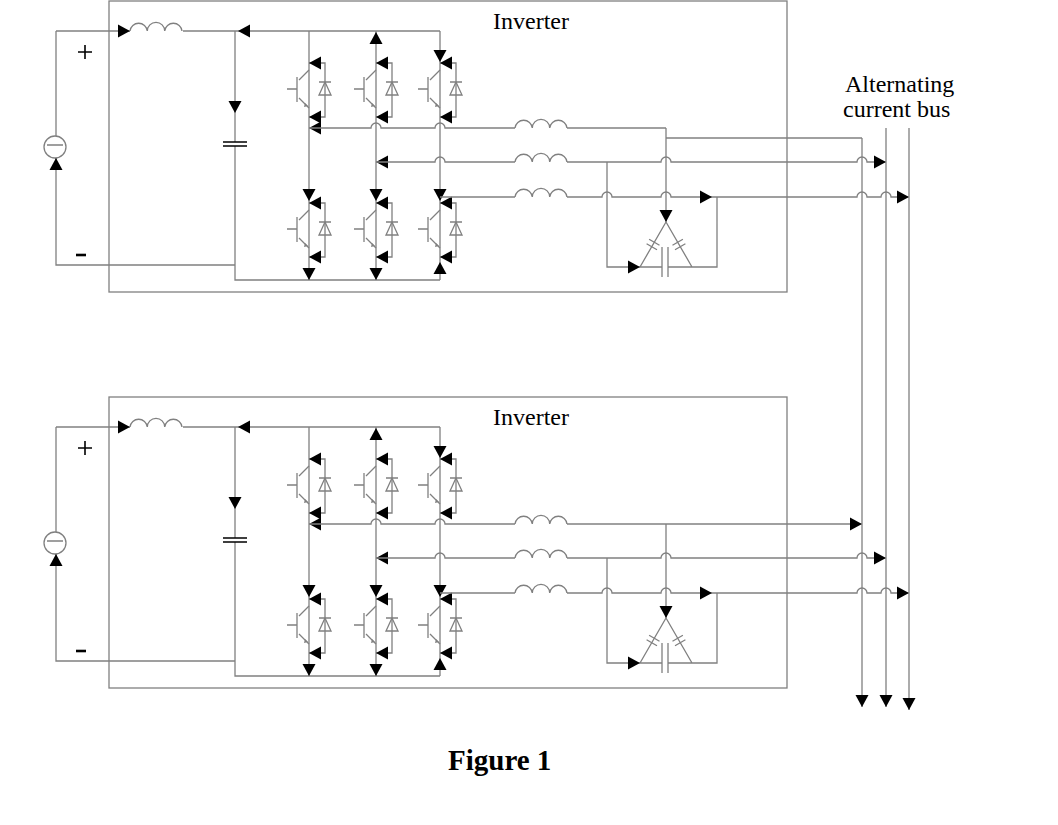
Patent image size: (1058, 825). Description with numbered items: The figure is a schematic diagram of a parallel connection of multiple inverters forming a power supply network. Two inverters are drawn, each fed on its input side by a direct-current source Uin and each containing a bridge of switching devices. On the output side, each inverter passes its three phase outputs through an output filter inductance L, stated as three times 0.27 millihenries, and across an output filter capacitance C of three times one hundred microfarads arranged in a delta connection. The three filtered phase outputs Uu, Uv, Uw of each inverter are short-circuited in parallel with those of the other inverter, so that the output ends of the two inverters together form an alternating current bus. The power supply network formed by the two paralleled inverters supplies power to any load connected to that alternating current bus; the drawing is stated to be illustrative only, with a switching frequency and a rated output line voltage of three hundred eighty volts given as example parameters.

The output filter inductance L is at (487, 110).
The output filter capacitance C is at (662, 210).
The input voltage source Uin is at (139, 148).
The U-phase output Uu is at (809, 117).
The V-phase output Uv is at (631, 153).
The W-phase output Uw is at (674, 188).